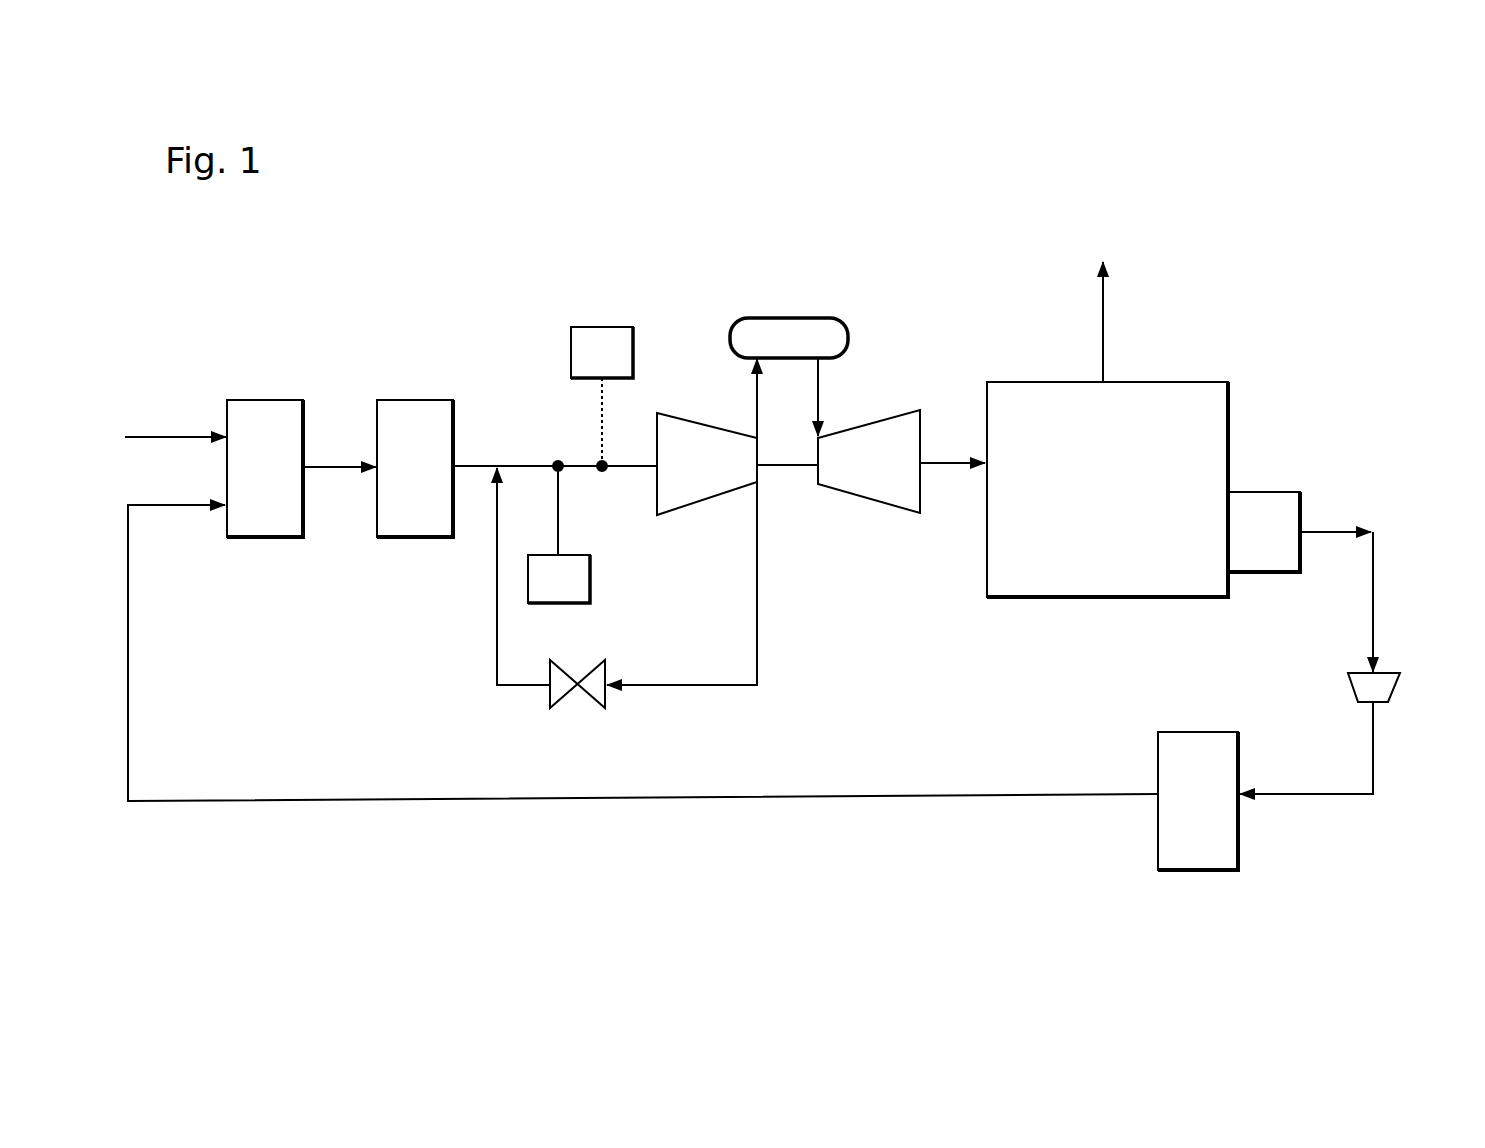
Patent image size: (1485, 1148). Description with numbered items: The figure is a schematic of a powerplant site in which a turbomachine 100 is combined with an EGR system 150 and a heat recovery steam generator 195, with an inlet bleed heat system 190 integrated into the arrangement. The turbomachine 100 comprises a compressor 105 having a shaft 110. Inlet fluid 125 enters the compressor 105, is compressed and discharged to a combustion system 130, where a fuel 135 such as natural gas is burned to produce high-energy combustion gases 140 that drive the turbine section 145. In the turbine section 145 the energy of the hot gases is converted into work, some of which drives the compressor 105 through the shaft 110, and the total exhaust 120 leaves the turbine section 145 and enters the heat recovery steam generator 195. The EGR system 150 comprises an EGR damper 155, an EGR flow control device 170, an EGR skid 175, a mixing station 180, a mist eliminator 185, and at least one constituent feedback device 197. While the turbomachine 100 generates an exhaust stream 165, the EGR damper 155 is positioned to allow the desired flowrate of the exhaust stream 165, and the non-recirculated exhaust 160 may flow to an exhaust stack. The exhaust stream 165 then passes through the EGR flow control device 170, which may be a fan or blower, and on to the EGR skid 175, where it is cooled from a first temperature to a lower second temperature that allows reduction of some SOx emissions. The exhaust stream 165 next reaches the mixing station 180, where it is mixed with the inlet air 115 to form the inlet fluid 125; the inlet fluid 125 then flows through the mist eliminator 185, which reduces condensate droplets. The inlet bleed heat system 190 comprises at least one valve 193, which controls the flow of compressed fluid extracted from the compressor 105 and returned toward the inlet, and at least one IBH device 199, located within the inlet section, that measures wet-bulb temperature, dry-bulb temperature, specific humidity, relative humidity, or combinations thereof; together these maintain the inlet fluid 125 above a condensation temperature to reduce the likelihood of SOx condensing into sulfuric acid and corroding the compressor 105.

The turbomachine 100 is at (597, 293).
The compressor 105 is at (707, 464).
The shaft 110 is at (783, 467).
The inlet air 115 is at (165, 437).
The total exhaust 120 is at (944, 470).
The inlet fluid 125 is at (323, 463).
The combustion system 130 is at (785, 318).
The fuel 135 is at (731, 316).
The combustion gases 140 is at (820, 398).
The turbine section 145 is at (869, 461).
The EGR system 150 is at (1249, 315).
The EGR damper 155 is at (1264, 532).
The non-recirculated exhaust 160 is at (1105, 306).
The exhaust stream 165 is at (1322, 520).
The EGR flow control device 170 is at (1390, 675).
The EGR skid 175 is at (1198, 801).
The mixing station 180 is at (265, 468).
The mist eliminator 185 is at (415, 468).
The inlet bleed heat system 190 is at (627, 575).
The valve 193 is at (578, 702).
The heat recovery steam generator 195 is at (1107, 489).
The constituent feedback device 197 is at (559, 536).
The IBH device 199 is at (602, 394).